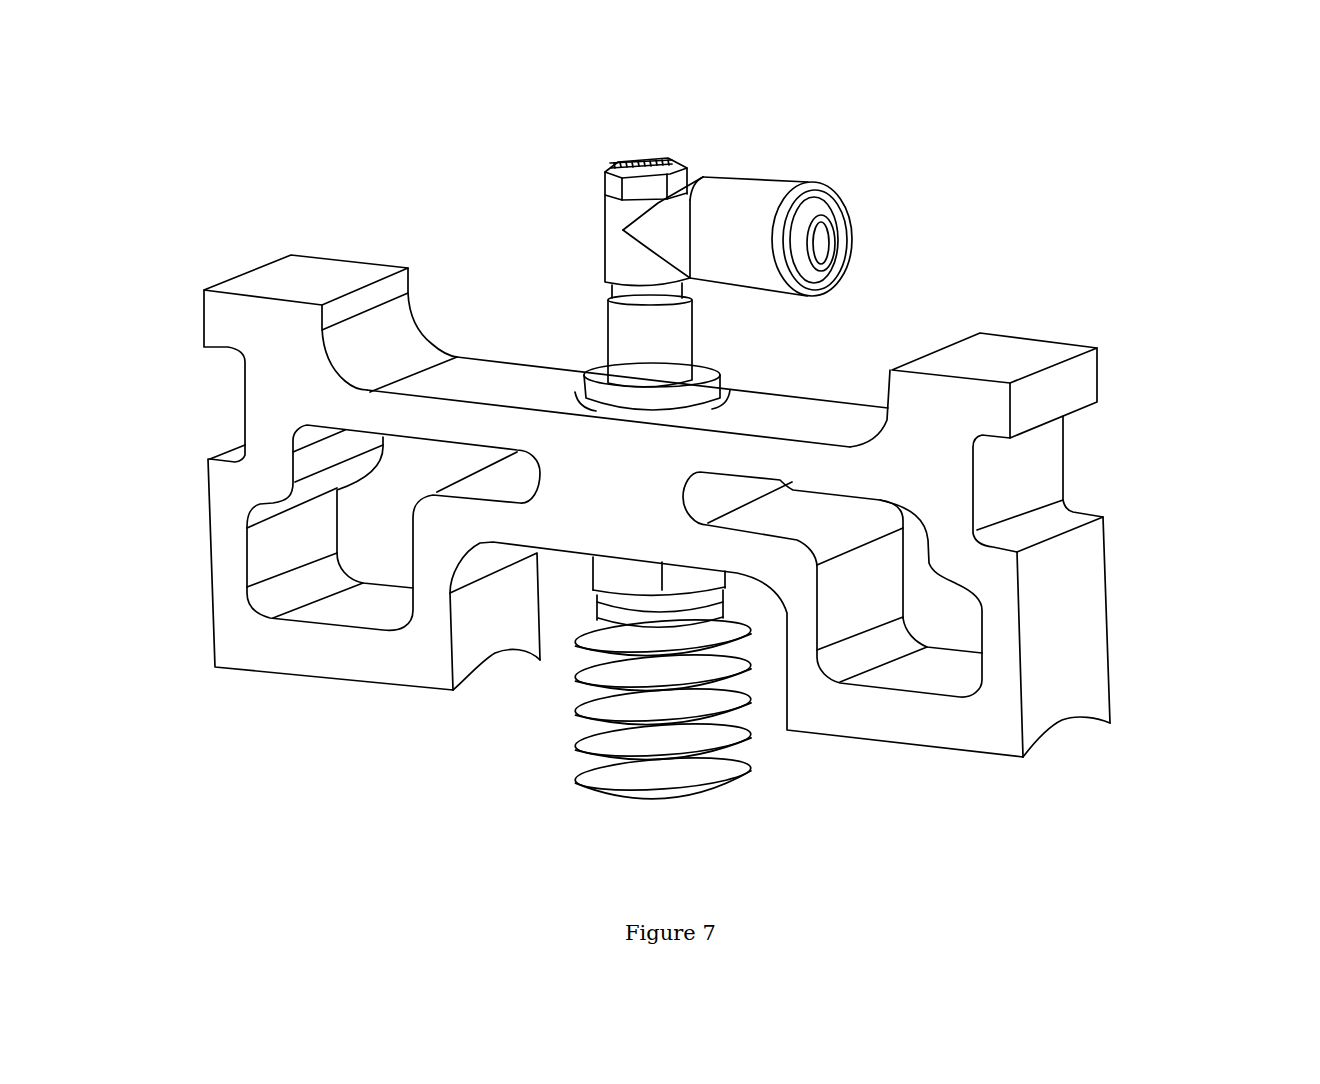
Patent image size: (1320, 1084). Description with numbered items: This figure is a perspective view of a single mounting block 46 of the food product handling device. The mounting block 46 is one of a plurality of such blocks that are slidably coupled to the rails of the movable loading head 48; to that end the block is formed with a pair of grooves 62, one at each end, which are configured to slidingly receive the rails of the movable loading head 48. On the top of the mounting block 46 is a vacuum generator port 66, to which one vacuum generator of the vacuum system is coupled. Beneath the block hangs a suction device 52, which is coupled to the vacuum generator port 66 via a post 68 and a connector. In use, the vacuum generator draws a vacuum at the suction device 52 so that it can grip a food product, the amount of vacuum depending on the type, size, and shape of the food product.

The mounting block 46 is at (1220, 218).
The movable loading head 48 is at (1040, 745).
The suction device 52 is at (760, 780).
The groove 62 is at (247, 392).
The vacuum generator port 66 is at (742, 193).
The post 68 is at (722, 376).